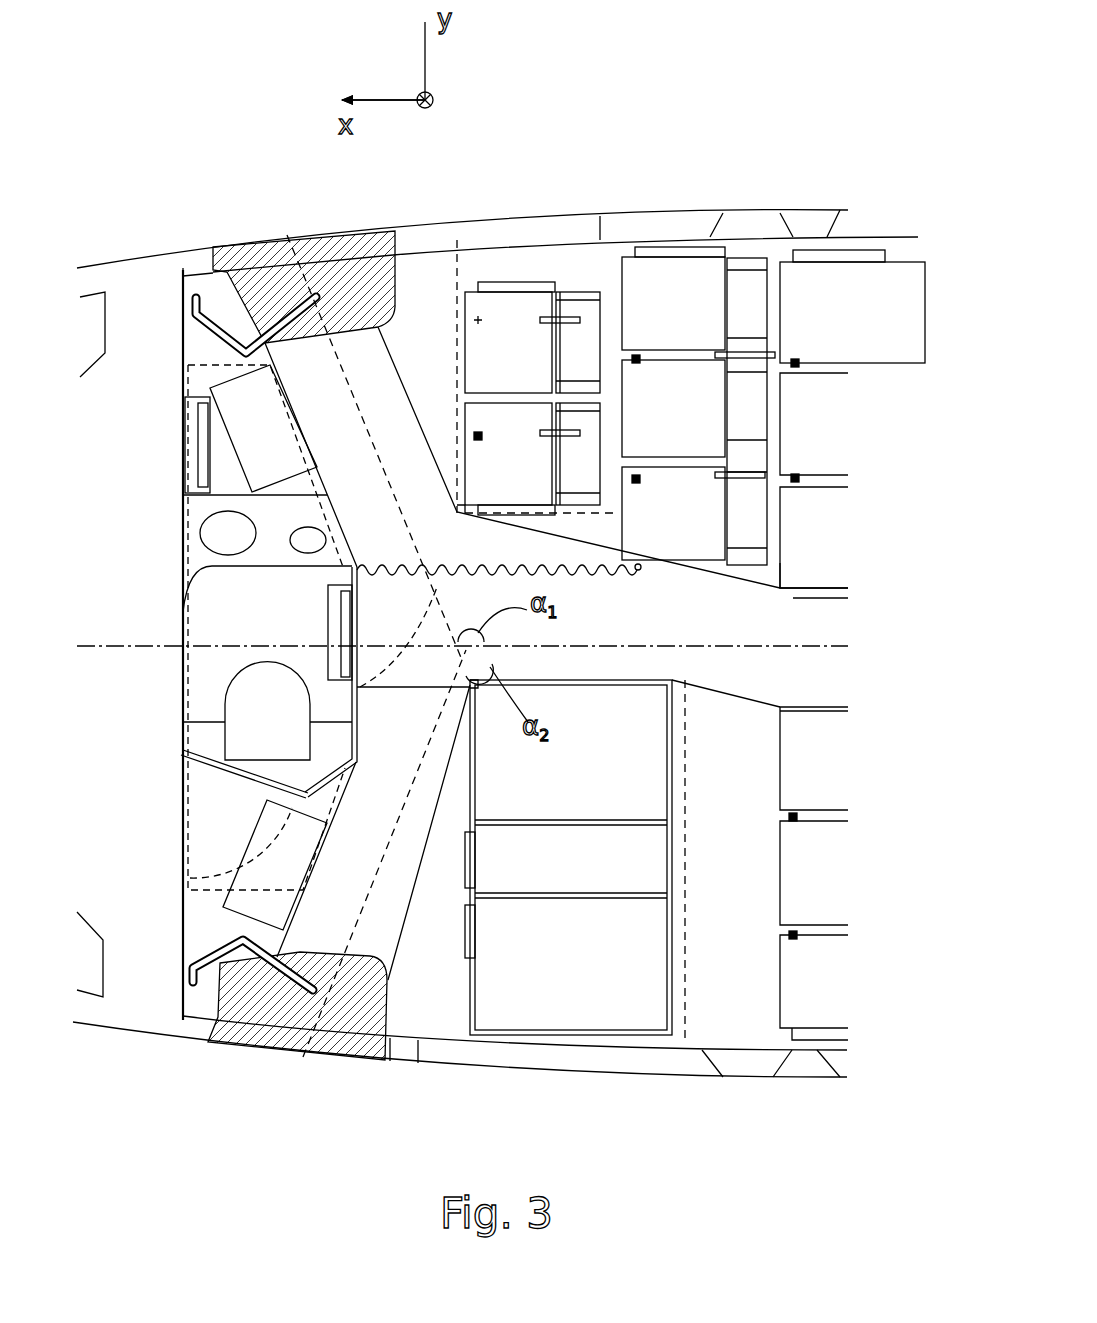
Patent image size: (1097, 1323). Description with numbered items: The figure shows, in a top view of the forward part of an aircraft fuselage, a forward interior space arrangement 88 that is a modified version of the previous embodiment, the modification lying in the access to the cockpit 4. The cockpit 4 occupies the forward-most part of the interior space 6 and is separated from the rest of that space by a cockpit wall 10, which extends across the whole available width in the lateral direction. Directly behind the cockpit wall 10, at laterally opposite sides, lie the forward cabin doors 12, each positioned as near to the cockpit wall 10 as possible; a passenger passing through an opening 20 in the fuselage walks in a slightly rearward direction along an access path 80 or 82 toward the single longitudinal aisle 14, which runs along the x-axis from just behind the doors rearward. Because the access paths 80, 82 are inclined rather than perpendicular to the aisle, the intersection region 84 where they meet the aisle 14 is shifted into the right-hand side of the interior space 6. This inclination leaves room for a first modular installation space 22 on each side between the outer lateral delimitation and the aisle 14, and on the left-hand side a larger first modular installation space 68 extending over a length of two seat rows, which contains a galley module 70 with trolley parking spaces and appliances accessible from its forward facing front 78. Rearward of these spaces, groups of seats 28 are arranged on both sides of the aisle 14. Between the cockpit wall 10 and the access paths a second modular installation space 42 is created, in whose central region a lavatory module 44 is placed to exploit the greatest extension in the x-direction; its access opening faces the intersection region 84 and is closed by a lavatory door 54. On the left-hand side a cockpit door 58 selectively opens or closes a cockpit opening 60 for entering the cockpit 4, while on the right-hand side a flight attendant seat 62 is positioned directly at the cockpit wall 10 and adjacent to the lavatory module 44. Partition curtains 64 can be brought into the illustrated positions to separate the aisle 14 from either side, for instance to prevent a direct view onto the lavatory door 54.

The cockpit 4 is at (99, 750).
The interior space 6 is at (405, 275).
The cockpit wall 10 is at (183, 386).
The forward cabin door 12 is at (350, 232).
The longitudinal aisle 14 is at (845, 685).
The opening 20 is at (206, 1048).
The first modular installation space 22 is at (482, 258).
The seat 28 is at (531, 360).
The second modular installation space 42 is at (190, 440).
The lavatory module 44 is at (210, 619).
The lavatory door 54 is at (333, 612).
The cockpit door 58 is at (218, 775).
The cockpit opening 60 is at (183, 805).
The flight attendant seat 62 is at (205, 435).
The partition curtain 64 is at (357, 566).
The first modular installation space 68 is at (678, 1033).
The galley module 70 is at (588, 1015).
The front 78 is at (490, 1052).
The access path 80 is at (403, 855).
The access path 82 is at (390, 455).
The intersection region 84 is at (507, 543).
The arrangement 88 is at (237, 146).